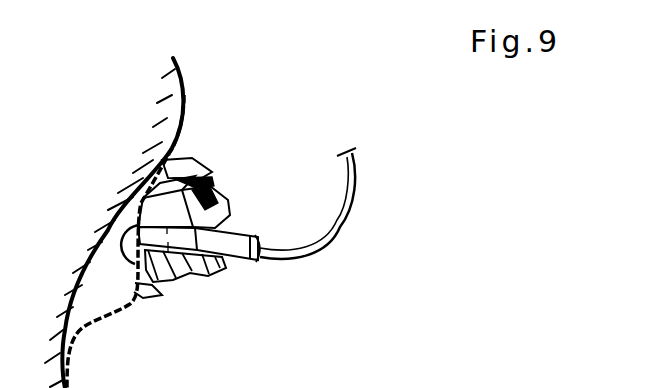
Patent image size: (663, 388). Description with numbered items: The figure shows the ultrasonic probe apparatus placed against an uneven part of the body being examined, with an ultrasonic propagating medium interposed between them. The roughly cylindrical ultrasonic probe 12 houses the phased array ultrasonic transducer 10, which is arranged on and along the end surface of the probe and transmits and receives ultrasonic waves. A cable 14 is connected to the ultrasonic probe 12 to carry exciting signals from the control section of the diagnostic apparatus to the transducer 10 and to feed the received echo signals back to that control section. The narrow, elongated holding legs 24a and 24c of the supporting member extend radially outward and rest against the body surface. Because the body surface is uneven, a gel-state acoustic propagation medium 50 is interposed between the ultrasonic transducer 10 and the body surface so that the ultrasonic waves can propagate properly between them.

The holding leg 24a is at (187, 100).
The holding leg 24c is at (73, 349).
The gel-state acoustic propagation medium 50 is at (182, 167).
The phased array ultrasonic transducer 10 is at (138, 293).
The ultrasonic probe 12 is at (195, 283).
The cable 14 is at (355, 206).